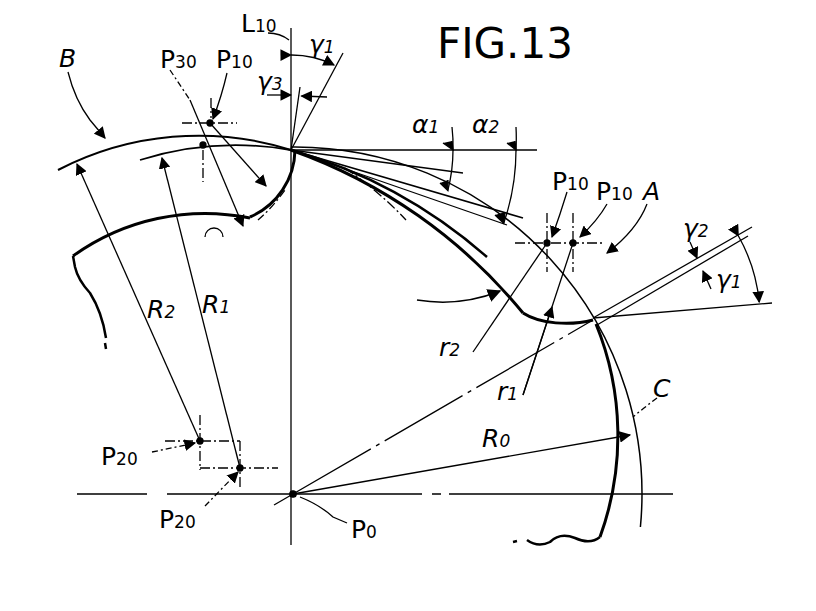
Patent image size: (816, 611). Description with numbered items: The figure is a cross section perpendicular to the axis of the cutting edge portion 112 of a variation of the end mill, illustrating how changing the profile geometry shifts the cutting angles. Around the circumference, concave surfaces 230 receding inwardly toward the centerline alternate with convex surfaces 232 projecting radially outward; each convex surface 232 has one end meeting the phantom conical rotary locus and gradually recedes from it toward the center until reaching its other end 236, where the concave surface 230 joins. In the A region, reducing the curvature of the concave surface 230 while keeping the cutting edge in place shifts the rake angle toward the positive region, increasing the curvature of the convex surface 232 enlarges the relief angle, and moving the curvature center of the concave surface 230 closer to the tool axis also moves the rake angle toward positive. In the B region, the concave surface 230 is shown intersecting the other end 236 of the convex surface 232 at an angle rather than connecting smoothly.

The cutting edge portion 112 is at (597, 472).
The concave surface 230 is at (225, 237).
The convex surface 232 is at (87, 253).
The other end of the convex surface 236 is at (150, 208).